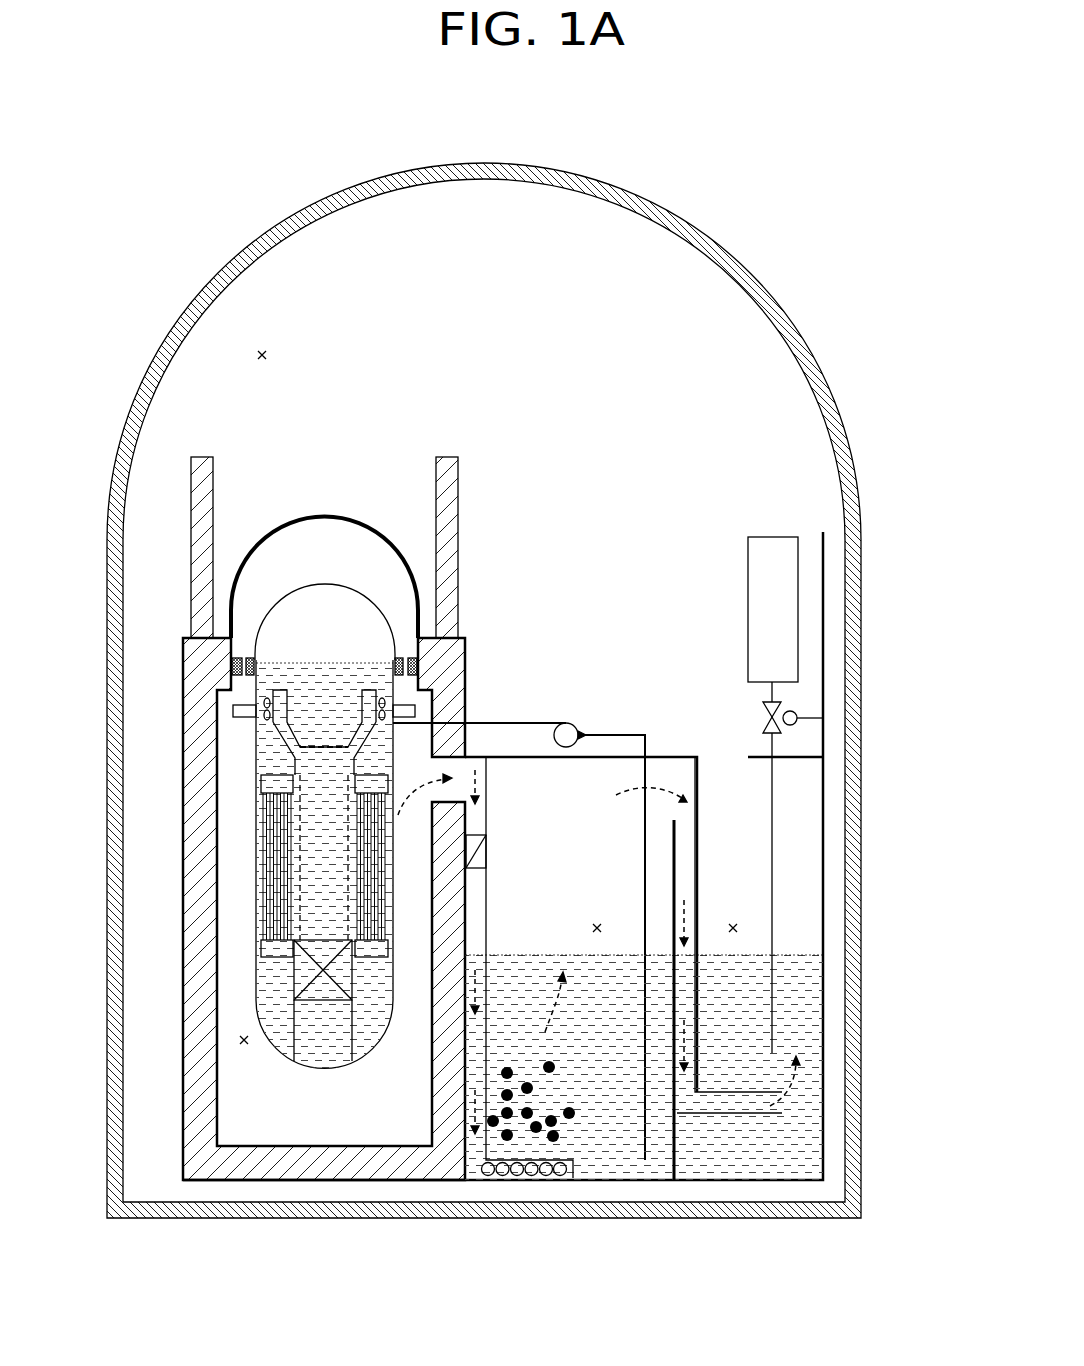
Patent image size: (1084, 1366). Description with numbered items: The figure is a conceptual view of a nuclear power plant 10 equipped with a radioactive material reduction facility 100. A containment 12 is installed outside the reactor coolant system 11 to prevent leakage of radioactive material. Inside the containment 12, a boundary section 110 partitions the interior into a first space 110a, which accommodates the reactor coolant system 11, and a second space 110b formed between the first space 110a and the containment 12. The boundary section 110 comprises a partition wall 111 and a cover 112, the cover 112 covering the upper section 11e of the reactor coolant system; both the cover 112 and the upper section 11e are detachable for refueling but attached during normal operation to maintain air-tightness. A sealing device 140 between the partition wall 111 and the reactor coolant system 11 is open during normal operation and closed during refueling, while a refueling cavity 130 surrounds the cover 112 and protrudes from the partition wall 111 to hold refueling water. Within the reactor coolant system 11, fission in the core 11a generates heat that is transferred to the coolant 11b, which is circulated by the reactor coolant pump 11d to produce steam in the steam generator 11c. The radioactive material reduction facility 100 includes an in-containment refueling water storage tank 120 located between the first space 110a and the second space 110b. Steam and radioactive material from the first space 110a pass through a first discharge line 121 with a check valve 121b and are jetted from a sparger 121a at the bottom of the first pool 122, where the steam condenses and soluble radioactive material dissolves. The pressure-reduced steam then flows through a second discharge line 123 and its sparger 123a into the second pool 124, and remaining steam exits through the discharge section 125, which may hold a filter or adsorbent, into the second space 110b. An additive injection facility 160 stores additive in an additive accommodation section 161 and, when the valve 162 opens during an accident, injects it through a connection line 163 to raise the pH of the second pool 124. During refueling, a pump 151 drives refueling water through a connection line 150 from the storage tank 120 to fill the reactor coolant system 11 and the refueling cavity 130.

The nuclear power plant 10 is at (484, 679).
The containment 12 is at (752, 283).
The radioactive material reduction facility 100 is at (675, 519).
The boundary section 110 is at (346, 450).
The partition wall 111 is at (224, 634).
The cover 112 is at (325, 516).
The first space 110a is at (244, 1040).
The second space 110b is at (262, 355).
The refueling cavity 130 is at (460, 547).
The sealing device 140 is at (420, 666).
The reactor coolant system 11 is at (238, 868).
The core 11a is at (323, 1002).
The coolant 11b is at (365, 1040).
The steam generator 11c is at (272, 912).
The reactor coolant pump 11d is at (265, 716).
The upper section of the reactor coolant system 11e is at (337, 590).
The connection line 150 is at (519, 908).
The pump 151 is at (566, 722).
The in-containment refueling water storage tank 120 is at (834, 1285).
The first discharge line 121 is at (474, 1160).
The sparger 121a is at (520, 1176).
The check valve 121b is at (478, 848).
The first pool 122 is at (597, 932).
The second discharge line 123 is at (687, 1092).
The sparger 123a is at (728, 1106).
The second pool 124 is at (733, 932).
The discharge section 125 is at (724, 746).
The additive injection facility 160 is at (915, 617).
The additive accommodation section 161 is at (785, 618).
The valve 162 is at (824, 719).
The connection line 163 is at (774, 795).